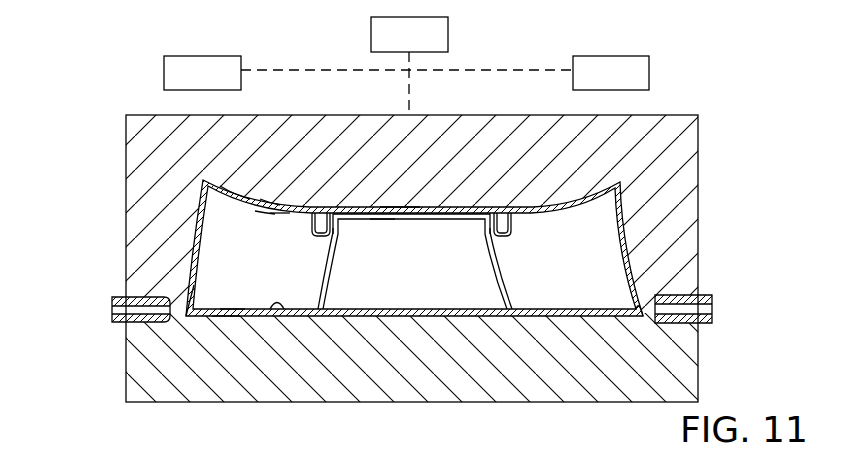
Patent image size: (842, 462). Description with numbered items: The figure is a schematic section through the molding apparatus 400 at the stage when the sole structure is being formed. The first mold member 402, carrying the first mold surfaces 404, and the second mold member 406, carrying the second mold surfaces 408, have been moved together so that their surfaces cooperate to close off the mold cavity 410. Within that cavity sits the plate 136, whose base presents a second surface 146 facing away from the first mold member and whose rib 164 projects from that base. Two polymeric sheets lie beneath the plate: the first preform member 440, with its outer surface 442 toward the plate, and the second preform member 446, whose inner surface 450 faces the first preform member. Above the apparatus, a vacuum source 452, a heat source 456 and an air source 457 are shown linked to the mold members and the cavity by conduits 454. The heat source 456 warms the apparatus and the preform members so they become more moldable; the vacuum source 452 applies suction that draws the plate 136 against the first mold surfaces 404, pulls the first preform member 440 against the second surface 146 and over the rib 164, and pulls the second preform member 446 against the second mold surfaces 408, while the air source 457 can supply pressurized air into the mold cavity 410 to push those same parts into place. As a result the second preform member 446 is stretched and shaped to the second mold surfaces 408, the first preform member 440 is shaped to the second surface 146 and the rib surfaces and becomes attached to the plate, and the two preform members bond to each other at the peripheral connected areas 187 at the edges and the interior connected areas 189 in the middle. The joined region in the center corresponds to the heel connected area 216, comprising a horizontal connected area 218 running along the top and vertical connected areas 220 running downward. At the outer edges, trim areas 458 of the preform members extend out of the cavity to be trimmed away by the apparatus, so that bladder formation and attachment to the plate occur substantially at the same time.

The molding apparatus 400 is at (104, 114).
The first mold member 402 is at (125, 198).
The first mold surfaces 404 is at (230, 183).
The second mold member 406 is at (125, 362).
The second mold surfaces 408 is at (277, 303).
The mold cavity 410 is at (218, 251).
The plate 136 is at (295, 198).
The second surface 146 is at (280, 215).
The rib 164 is at (316, 237).
The peripheral connected area 187 is at (192, 290).
The interior connected area 189 is at (381, 220).
The heel connected area 216 is at (418, 226).
The horizontal connected area 218 is at (400, 207).
The vertical connected area 220 is at (338, 230).
The first preform member 440 is at (261, 214).
The outer surface 442 is at (270, 202).
The second preform member 446 is at (230, 309).
The inner surface 450 is at (224, 316).
The vacuum source 452 is at (371, 36).
The conduits 454 is at (409, 106).
The heat source 456 is at (612, 56).
The air source 457 is at (207, 56).
The trim areas 458 is at (113, 314).